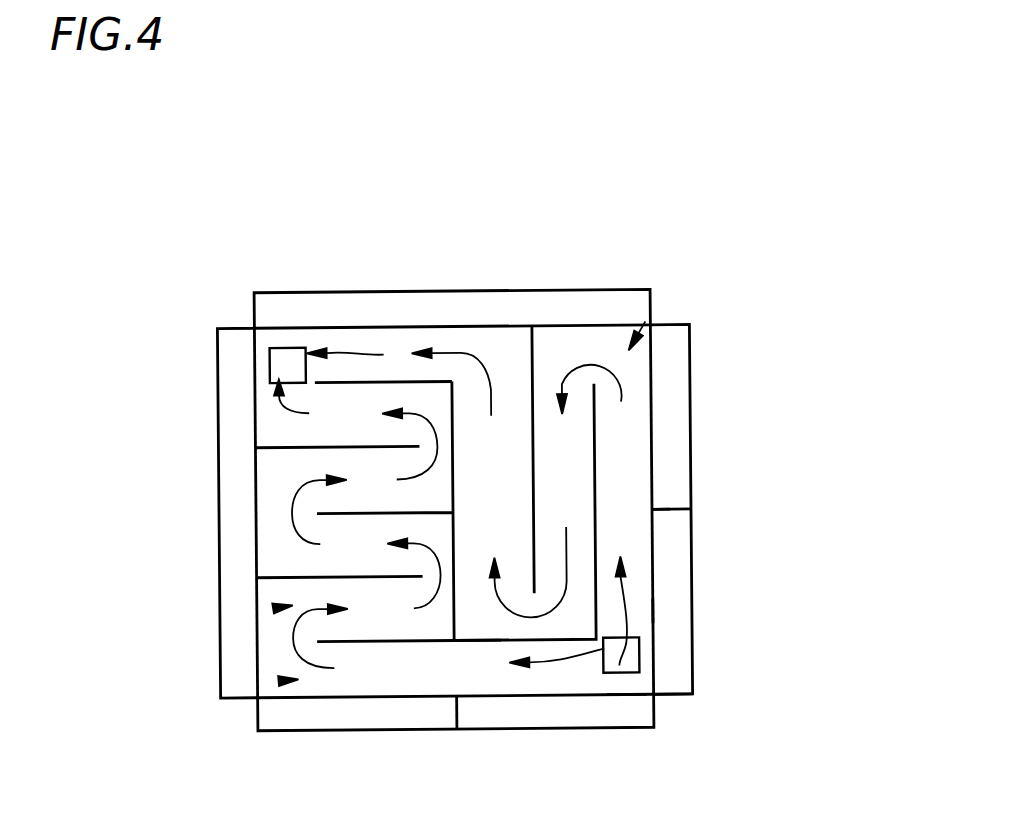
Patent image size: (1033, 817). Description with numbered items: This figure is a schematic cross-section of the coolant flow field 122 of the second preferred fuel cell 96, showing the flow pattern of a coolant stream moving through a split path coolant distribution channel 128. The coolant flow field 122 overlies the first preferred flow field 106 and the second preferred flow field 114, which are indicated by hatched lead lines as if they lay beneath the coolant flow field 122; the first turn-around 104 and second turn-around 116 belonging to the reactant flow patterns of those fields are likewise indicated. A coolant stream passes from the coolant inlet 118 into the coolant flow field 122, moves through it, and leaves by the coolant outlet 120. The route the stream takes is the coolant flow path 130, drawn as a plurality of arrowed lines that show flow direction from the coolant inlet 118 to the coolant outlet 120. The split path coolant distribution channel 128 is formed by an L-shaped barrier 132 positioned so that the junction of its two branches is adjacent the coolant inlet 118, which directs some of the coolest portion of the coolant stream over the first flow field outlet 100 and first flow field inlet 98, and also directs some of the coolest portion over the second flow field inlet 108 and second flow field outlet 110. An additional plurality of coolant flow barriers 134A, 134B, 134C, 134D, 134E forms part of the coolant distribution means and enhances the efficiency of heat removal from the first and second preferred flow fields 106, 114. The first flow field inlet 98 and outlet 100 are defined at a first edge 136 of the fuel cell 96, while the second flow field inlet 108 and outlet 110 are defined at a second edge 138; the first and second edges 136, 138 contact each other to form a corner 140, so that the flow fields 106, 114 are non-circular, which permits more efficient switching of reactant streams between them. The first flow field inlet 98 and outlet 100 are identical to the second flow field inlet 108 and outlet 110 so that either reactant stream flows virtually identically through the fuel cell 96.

The second preferred fuel cell 96 is at (744, 203).
The first flow field inlet 98 is at (670, 380).
The first flow field outlet 100 is at (677, 583).
The first turn-around 104 is at (235, 445).
The first preferred flow field 106 is at (652, 317).
The second flow field inlet 108 is at (557, 712).
The second flow field outlet 110 is at (377, 715).
The second preferred flow field 114 is at (272, 606).
The second turn-around 116 is at (384, 308).
The coolant inlet 118 is at (655, 652).
The coolant outlet 120 is at (270, 332).
The coolant flow field 122 is at (277, 678).
The split path coolant distribution channel 128 is at (650, 492).
The coolant flow path 130 is at (492, 350).
The L-shaped barrier 132 is at (474, 645).
The coolant flow barrier 134A is at (535, 365).
The coolant flow barrier 134B is at (455, 617).
The coolant flow barrier 134C is at (283, 573).
The coolant flow barrier 134D is at (380, 510).
The coolant flow barrier 134E is at (283, 447).
The first edge 136 is at (655, 611).
The second edge 138 is at (624, 694).
The corner 140 is at (657, 694).